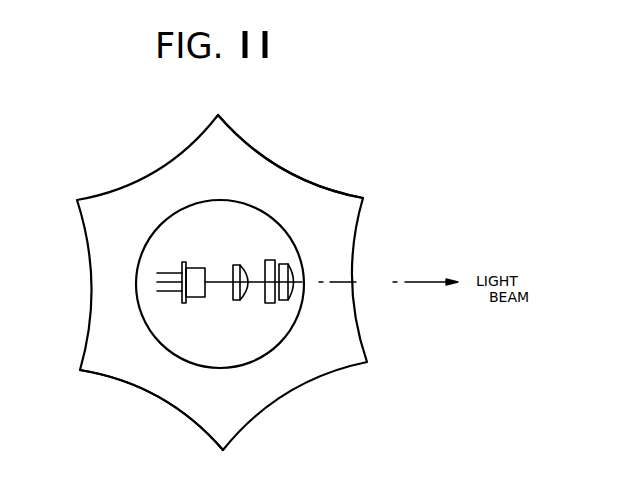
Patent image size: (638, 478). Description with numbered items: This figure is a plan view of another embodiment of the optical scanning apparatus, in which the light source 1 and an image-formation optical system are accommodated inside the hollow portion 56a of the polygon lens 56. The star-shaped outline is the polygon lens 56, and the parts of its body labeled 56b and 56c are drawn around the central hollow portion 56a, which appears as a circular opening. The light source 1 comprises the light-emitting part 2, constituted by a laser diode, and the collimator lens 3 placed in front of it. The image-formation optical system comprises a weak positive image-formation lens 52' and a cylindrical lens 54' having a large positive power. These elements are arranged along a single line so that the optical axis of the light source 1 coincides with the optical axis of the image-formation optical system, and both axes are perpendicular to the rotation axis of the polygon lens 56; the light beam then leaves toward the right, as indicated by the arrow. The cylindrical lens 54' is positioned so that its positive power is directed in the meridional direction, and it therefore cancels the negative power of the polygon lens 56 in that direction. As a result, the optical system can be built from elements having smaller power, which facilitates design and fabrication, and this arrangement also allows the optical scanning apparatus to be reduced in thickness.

The light source 1 is at (238, 256).
The light-emitting part 2 is at (196, 305).
The collimator lens 3 is at (238, 303).
The image-formation lens 52' is at (280, 325).
The cylindrical lens 54' is at (312, 305).
The polygon lens 56 is at (141, 177).
The hollow portion 56a is at (165, 336).
The holder bore 56b is at (148, 260).
The holder arm 56c is at (300, 178).